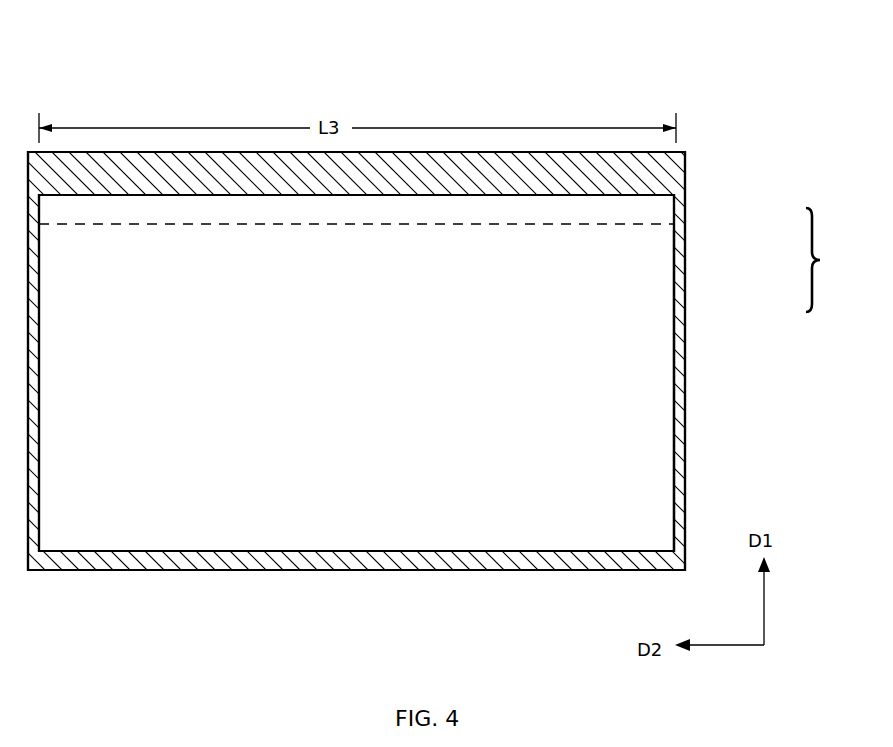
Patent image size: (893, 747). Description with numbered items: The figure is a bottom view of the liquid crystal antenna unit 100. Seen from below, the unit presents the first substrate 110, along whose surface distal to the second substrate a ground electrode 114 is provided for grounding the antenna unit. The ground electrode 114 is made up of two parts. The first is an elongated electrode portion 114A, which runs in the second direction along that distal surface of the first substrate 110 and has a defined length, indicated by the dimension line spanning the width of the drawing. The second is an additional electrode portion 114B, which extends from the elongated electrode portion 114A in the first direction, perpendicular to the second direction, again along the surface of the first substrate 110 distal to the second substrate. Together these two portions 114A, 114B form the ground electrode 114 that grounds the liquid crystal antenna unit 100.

The liquid crystal antenna unit 100 is at (418, 90).
The first substrate 110 is at (686, 171).
The elongated electrode portion 114A is at (674, 207).
The additional electrode portion 114B is at (674, 305).
The ground electrode 114 is at (837, 260).